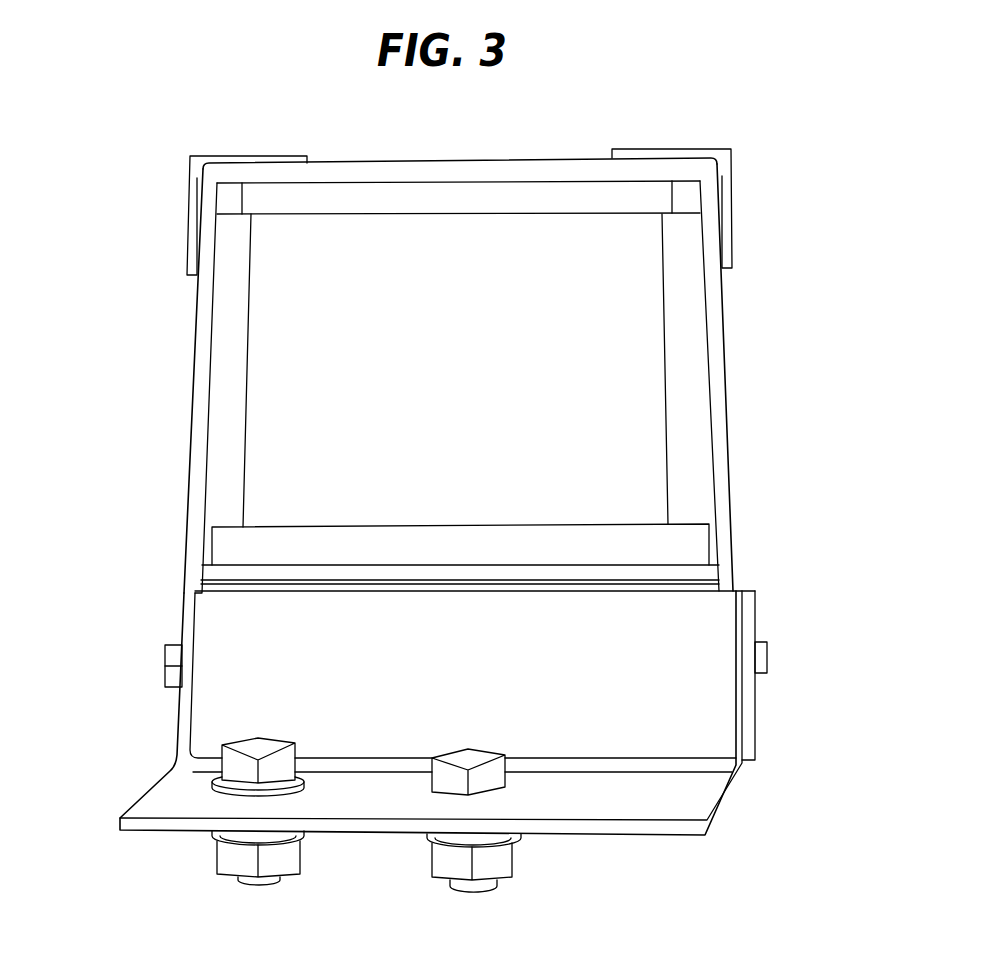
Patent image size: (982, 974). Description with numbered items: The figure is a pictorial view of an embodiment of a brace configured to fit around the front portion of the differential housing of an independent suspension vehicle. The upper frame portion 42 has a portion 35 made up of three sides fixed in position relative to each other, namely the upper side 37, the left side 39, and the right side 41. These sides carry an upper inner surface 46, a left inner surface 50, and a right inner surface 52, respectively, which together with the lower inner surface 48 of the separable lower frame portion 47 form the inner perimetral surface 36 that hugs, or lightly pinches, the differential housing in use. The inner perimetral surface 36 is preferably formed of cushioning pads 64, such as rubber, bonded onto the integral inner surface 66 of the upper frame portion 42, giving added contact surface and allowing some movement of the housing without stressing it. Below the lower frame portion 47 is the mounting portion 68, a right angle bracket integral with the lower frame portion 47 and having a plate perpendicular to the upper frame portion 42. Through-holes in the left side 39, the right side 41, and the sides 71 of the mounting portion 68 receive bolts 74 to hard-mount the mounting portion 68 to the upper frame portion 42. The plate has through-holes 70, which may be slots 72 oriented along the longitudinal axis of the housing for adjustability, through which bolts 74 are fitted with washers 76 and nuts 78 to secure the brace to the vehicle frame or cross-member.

The portion 35 is at (213, 140).
The inner perimetral surface 36 is at (265, 298).
The upper side 37 is at (345, 163).
The left side 39 is at (203, 303).
The right side 41 is at (723, 255).
The upper frame portion 42 is at (766, 300).
The upper inner surface 46 is at (403, 215).
The lower frame portion 47 is at (746, 560).
The lower inner surface 48 is at (608, 523).
The left inner surface 50 is at (250, 393).
The right inner surface 52 is at (667, 423).
The cushioning pads 64 is at (478, 207).
The integral inner surface 66 is at (208, 423).
The mounting portion 68 is at (801, 658).
The through-holes 70 is at (258, 797).
The sides 71 is at (169, 615).
The slots 72 is at (257, 786).
The bolts 74 is at (768, 674).
The washers 76 is at (431, 846).
The nuts 78 is at (296, 876).